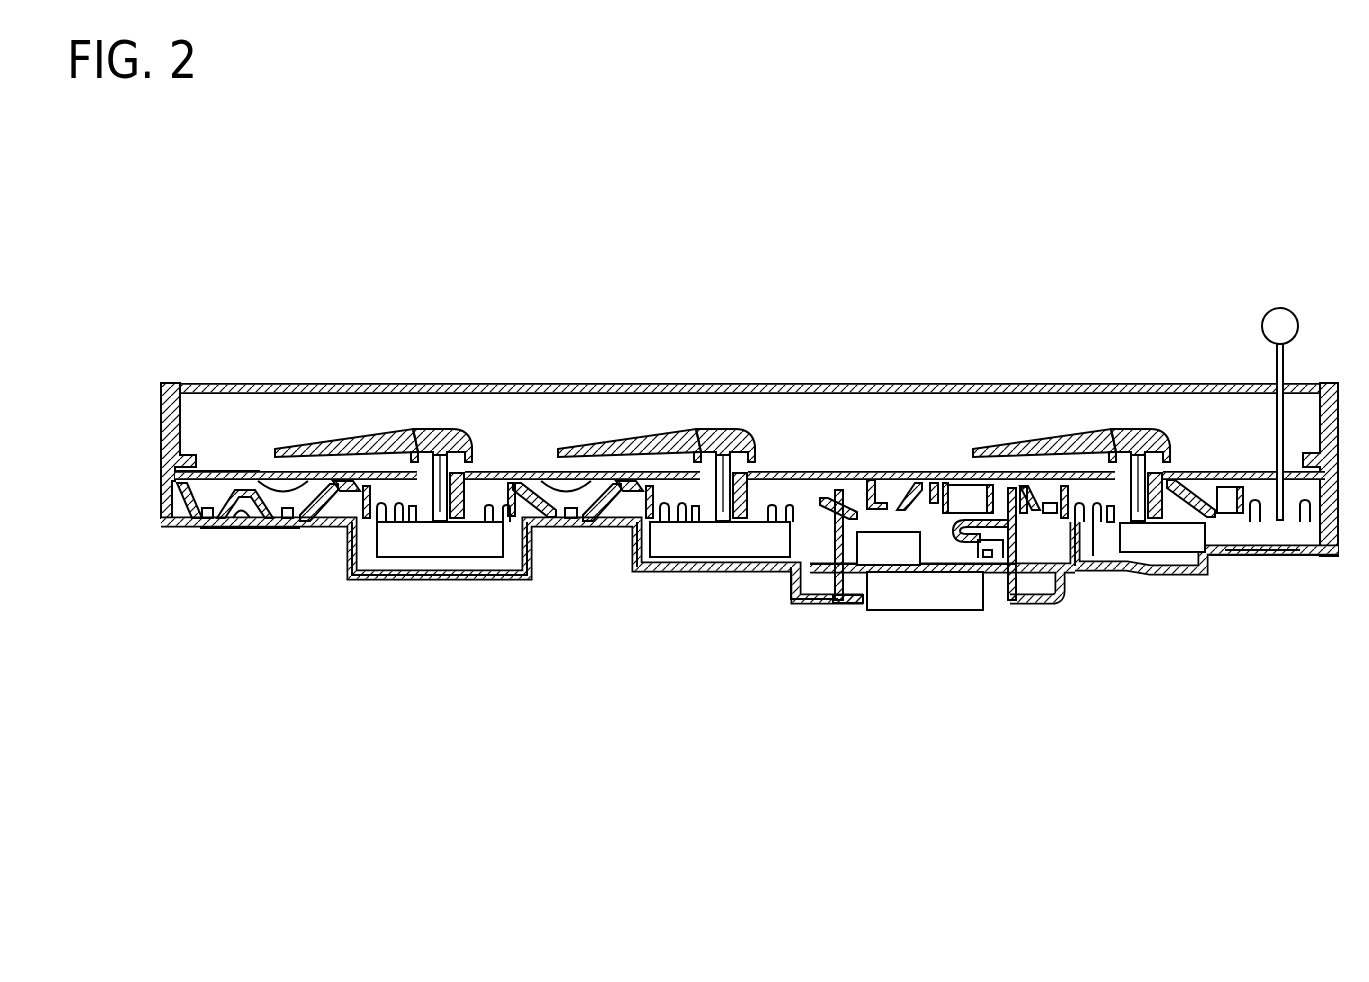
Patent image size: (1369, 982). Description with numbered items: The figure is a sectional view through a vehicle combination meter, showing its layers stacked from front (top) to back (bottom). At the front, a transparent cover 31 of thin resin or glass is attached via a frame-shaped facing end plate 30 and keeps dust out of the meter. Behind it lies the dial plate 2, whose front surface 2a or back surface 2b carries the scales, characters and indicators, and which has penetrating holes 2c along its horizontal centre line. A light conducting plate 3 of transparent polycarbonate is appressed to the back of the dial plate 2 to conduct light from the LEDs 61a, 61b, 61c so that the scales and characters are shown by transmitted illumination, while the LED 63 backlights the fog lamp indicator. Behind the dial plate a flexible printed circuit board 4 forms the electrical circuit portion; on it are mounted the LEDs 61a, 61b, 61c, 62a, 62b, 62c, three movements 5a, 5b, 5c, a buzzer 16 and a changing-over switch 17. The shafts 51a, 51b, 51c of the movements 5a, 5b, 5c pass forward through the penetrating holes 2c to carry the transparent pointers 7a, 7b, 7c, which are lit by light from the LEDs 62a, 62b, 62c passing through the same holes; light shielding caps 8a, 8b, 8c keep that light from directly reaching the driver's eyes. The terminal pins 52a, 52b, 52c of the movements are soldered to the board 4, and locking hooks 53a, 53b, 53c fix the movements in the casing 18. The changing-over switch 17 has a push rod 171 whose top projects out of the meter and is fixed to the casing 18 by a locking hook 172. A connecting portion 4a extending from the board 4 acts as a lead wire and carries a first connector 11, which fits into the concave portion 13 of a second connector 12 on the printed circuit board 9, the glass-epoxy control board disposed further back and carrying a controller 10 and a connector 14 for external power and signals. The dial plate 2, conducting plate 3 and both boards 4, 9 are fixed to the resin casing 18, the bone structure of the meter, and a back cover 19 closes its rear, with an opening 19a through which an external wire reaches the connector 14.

The dial plate 2 is at (256, 470).
The front surface 2a is at (1322, 445).
The back surface 2b is at (1340, 556).
The penetrating holes 2c is at (457, 578).
The light conducting plate 3 is at (246, 471).
The flexible printed circuit board 4 is at (250, 528).
The connecting portion 4a is at (928, 572).
The movement 5a is at (727, 557).
The movement 5b is at (442, 557).
The movement 5c is at (1137, 552).
The pointer 7a is at (629, 347).
The pointer 7b is at (372, 436).
The pointer 7c is at (1047, 347).
The light shielding cap 8a is at (723, 379).
The light shielding cap 8b is at (423, 429).
The light shielding cap 8c is at (1139, 379).
The printed circuit board 9 is at (812, 604).
The controller 10 is at (845, 604).
The first connector 11 is at (941, 545).
The second connector 12 is at (986, 558).
The concave portion 13 is at (1013, 560).
The connector 14 is at (893, 610).
The buzzer 16 is at (962, 485).
The changing-over switch 17 is at (1272, 493).
The push rod 171 is at (1287, 362).
The locking hook 172 is at (1278, 522).
The casing 18 is at (163, 510).
The back cover 19 is at (180, 537).
The opening 19a is at (868, 572).
The facing end plate 30 is at (161, 428).
The transparent cover 31 is at (197, 384).
The shaft 51a is at (693, 602).
The shaft 51b is at (413, 522).
The shaft 51c is at (1120, 602).
The terminal pin 52a is at (690, 625).
The terminal pin 52b is at (400, 522).
The terminal pin 52c is at (1123, 625).
The locking hook 53a is at (653, 611).
The locking hook 53b is at (380, 522).
The locking hook 53c is at (1093, 611).
The LED 61a is at (530, 481).
The LED 61b is at (322, 470).
The LED 61c is at (1068, 481).
The LED 62a is at (671, 379).
The LED 62b is at (486, 481).
The LED 62c is at (1195, 481).
The LED 63 is at (170, 354).